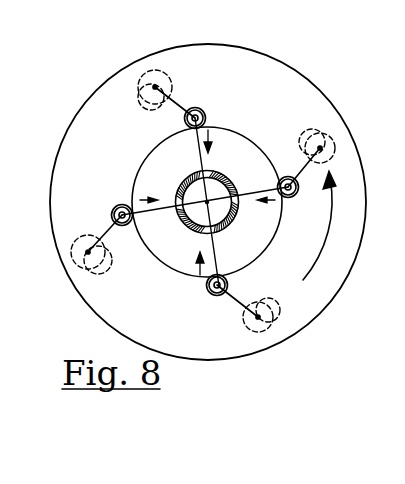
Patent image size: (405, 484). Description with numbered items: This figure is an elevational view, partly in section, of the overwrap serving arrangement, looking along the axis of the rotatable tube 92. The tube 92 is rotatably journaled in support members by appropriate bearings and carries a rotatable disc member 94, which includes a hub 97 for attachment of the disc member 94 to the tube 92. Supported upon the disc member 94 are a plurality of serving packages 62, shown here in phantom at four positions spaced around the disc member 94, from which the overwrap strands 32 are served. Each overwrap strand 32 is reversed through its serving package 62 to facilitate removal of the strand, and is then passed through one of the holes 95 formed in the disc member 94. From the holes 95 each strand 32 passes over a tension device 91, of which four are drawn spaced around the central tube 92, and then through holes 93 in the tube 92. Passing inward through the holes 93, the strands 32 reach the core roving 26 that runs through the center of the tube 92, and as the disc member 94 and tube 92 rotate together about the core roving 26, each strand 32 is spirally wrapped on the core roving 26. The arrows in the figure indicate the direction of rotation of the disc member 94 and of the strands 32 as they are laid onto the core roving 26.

The disc member 94 is at (265, 24).
The hub 97 is at (250, 118).
The tube 92 is at (221, 175).
The holes 93 is at (204, 171).
The core roving 26 is at (206, 203).
The tension device 91 is at (184, 118).
The overwrap strands 32 is at (181, 104).
The holes 95 is at (170, 80).
The serving packages 62 is at (158, 62).